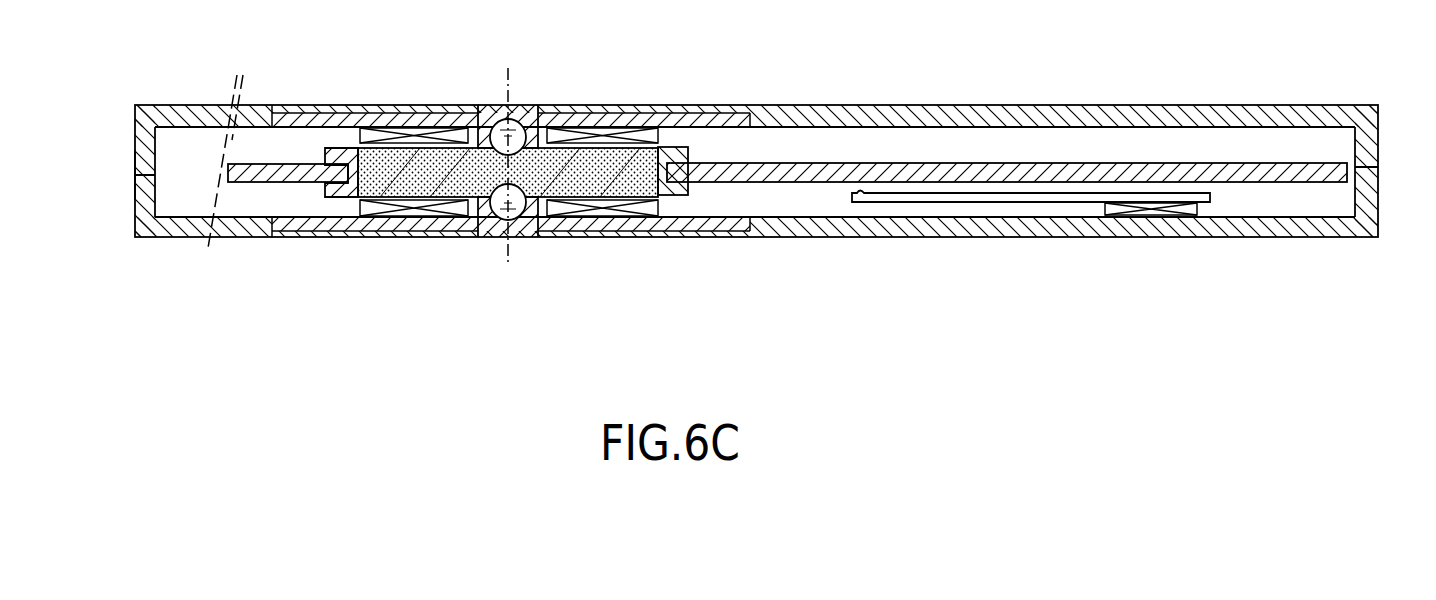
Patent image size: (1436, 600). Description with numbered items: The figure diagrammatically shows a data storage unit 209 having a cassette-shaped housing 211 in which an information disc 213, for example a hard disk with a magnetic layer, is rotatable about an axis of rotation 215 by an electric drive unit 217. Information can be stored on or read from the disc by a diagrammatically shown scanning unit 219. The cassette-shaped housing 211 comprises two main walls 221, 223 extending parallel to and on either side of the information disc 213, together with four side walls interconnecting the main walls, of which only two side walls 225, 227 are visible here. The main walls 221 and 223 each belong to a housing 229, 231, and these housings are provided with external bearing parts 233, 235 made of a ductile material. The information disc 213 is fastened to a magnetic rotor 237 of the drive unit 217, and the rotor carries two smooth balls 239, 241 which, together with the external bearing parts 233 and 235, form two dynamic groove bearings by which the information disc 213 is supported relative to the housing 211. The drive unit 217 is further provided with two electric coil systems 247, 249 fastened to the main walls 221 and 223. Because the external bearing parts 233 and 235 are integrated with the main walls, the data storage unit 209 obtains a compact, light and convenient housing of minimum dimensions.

The data storage unit 209 is at (146, 248).
The cassette-shaped housing 211 is at (128, 181).
The information disc 213 is at (912, 180).
The axis of rotation 215 is at (511, 88).
The electric drive unit 217 is at (674, 134).
The scanning unit 219 is at (1050, 197).
The main wall 221 is at (991, 115).
The main wall 223 is at (938, 227).
The side wall 225 is at (147, 132).
The side wall 227 is at (1379, 188).
The housing 229 is at (492, 92).
The housing 231 is at (528, 248).
The external bearing part 233 is at (483, 103).
The external bearing part 235 is at (493, 238).
The magnetic rotor 237 is at (348, 198).
The smooth ball 239 is at (433, 104).
The smooth ball 241 is at (445, 238).
The electric coil system 247 is at (612, 118).
The electric coil system 249 is at (602, 212).